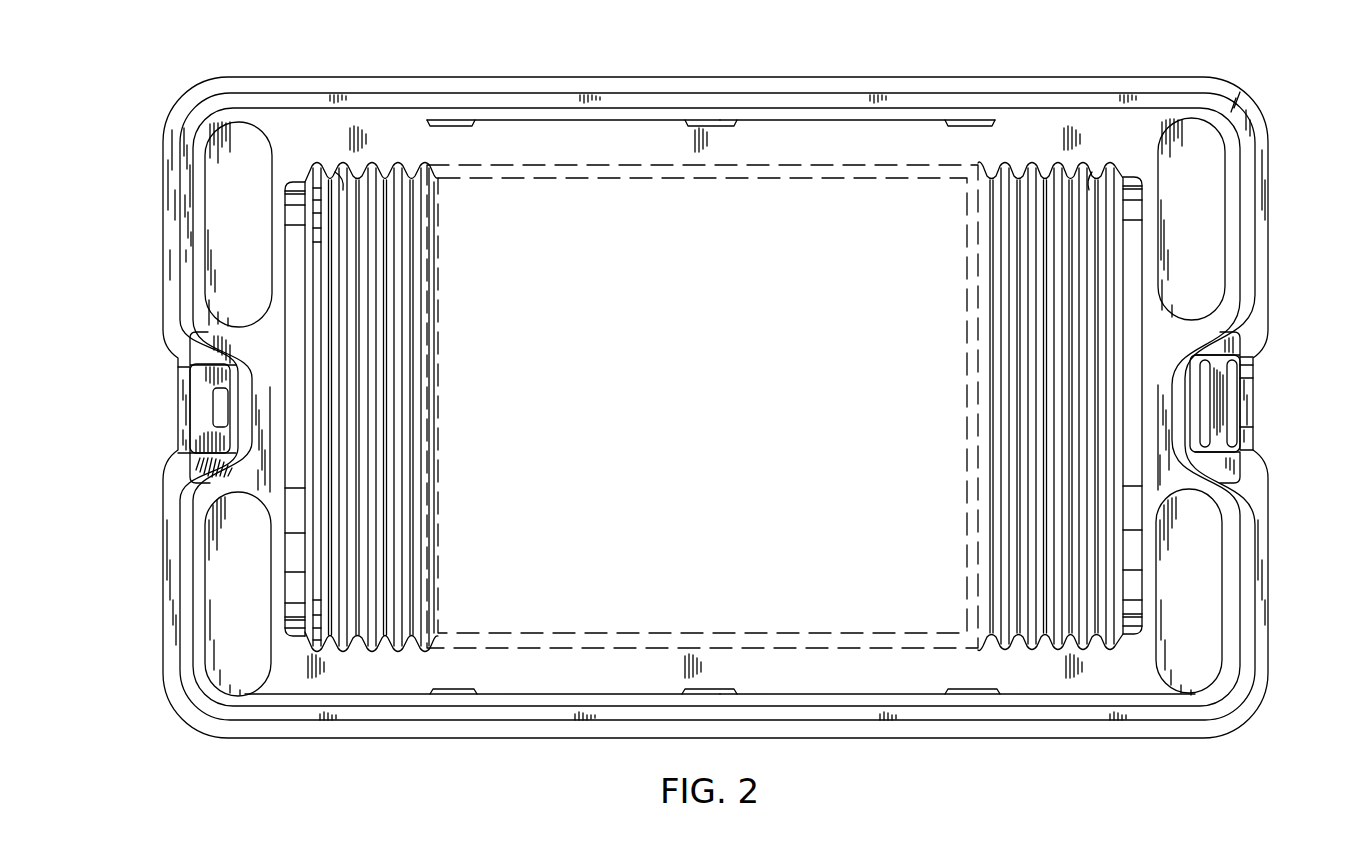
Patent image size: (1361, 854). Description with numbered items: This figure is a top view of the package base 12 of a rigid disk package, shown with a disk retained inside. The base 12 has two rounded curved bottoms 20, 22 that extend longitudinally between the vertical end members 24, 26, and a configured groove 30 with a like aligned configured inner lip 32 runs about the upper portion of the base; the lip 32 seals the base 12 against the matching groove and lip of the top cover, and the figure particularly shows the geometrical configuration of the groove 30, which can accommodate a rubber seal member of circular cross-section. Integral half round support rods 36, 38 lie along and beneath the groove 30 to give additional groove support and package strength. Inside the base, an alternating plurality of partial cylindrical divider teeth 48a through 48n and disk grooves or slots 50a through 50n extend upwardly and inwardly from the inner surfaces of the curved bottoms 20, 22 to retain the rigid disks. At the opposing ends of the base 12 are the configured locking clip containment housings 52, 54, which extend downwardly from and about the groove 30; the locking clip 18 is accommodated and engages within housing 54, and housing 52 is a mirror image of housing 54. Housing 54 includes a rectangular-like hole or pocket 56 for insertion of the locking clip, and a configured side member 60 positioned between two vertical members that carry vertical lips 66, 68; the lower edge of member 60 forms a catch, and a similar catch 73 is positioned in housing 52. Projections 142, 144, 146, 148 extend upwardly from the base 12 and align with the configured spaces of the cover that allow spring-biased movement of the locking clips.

The package base 12 is at (1282, 547).
The locking clip 18 is at (1233, 415).
The rounded curved bottom 20 is at (515, 672).
The rounded curved bottom 22 is at (522, 132).
The vertical end member 24 is at (277, 589).
The vertical end member 26 is at (1150, 587).
The configured groove 30 is at (281, 102).
The configured inner lip 32 is at (358, 113).
The half round support rod 36 is at (905, 672).
The half round support rod 38 is at (758, 135).
The divider tooth 48a is at (340, 178).
The divider tooth 48n is at (1095, 176).
The disk slot 50a is at (317, 163).
The disk slot 50n is at (1110, 161).
The locking clip containment housing 52 is at (136, 401).
The locking clip containment housing 54 is at (1274, 446).
The pocket 56 is at (1222, 397).
The configured side member 60 is at (1256, 376).
The vertical lip 66 is at (1256, 434).
The vertical lip 68 is at (1254, 367).
The catch 73 is at (220, 413).
The upwardly extending projection 142 is at (205, 470).
The upwardly extending projection 144 is at (210, 350).
The upwardly extending projection 146 is at (1227, 463).
The upwardly extending projection 148 is at (1225, 343).